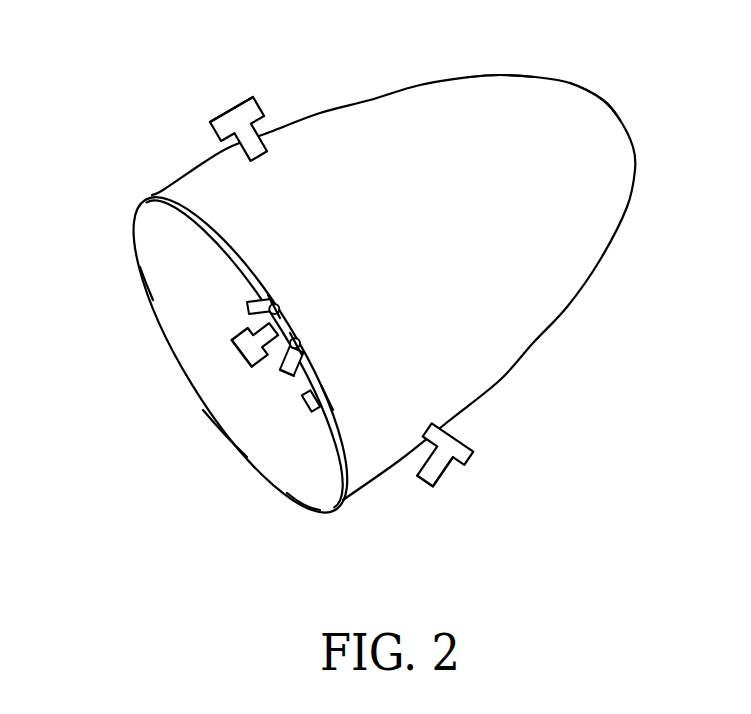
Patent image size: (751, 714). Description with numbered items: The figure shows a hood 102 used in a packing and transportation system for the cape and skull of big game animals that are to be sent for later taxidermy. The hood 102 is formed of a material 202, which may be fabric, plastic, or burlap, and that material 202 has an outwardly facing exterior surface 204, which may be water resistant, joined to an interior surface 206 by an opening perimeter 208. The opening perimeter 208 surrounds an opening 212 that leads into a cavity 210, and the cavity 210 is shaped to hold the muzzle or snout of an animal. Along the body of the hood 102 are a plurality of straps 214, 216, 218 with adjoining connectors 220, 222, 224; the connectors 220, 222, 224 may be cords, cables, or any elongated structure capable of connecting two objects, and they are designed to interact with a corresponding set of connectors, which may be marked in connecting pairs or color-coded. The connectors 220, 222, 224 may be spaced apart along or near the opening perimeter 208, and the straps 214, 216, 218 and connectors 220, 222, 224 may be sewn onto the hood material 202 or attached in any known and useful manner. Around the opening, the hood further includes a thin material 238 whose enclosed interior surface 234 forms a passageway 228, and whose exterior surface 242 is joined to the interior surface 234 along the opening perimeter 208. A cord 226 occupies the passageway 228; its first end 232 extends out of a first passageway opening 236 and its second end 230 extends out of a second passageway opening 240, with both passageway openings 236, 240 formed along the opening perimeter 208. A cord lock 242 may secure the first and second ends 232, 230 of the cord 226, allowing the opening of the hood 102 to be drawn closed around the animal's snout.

The hood 102 is at (497, 92).
The material 202 is at (620, 148).
The exterior surface 204 is at (600, 107).
The interior surface 206 is at (175, 277).
The opening perimeter 208 is at (310, 510).
The cavity 210 is at (160, 233).
The opening 212 is at (258, 447).
The strap 214 is at (268, 128).
The strap 216 is at (440, 443).
The strap 218 is at (250, 329).
The connector 220 is at (235, 112).
The connector 222 is at (450, 473).
The connector 224 is at (233, 348).
The cord 226 is at (283, 362).
The passageway 228 is at (280, 310).
The second end 230 is at (246, 302).
The first end 232 is at (283, 373).
The enclosed interior surface 234 is at (274, 304).
The first passageway opening 236 is at (300, 343).
The thin material 238 is at (223, 240).
The second passageway opening 240 is at (296, 338).
The cord lock 242 is at (327, 396).